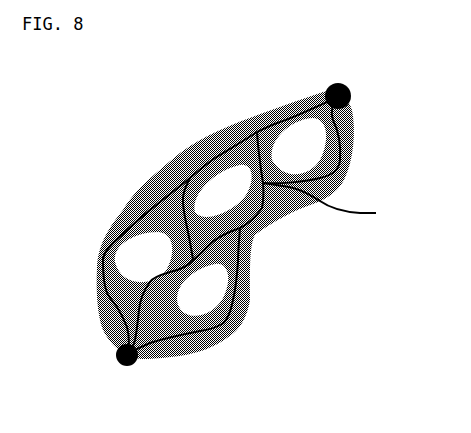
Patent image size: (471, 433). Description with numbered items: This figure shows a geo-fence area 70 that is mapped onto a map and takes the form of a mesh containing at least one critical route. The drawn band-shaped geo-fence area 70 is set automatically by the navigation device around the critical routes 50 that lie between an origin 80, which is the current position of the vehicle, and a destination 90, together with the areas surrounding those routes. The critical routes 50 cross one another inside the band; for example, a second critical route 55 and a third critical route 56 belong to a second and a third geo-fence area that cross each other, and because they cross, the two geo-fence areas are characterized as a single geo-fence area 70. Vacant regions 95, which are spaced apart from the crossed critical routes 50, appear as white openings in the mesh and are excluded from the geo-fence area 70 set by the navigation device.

The critical routes 50 is at (193, 173).
The second critical route 55 is at (271, 124).
The third critical route 56 is at (334, 161).
The geo-fence area 70 is at (263, 227).
The origin 80 is at (131, 366).
The destination 90 is at (351, 99).
The vacant regions 95 is at (140, 258).